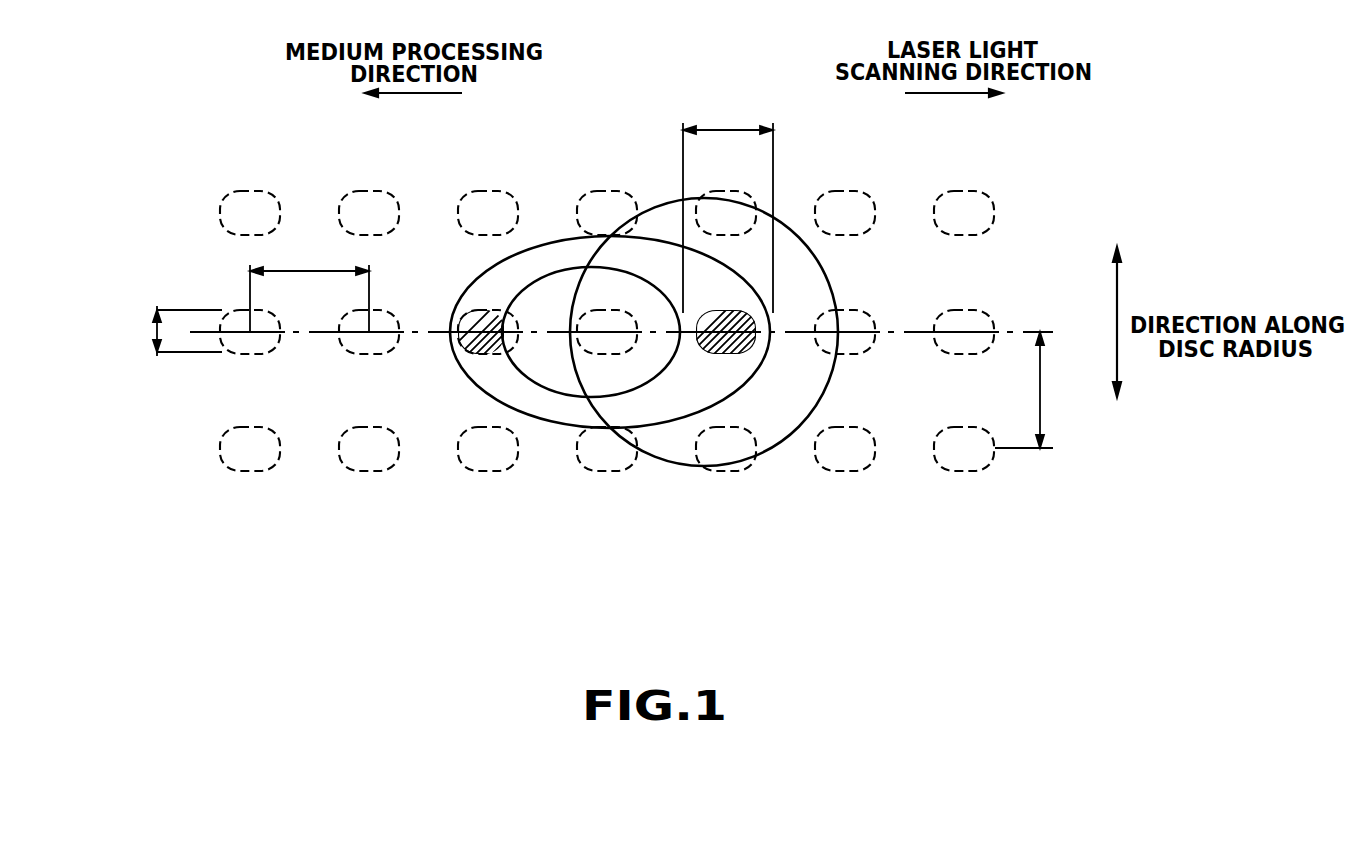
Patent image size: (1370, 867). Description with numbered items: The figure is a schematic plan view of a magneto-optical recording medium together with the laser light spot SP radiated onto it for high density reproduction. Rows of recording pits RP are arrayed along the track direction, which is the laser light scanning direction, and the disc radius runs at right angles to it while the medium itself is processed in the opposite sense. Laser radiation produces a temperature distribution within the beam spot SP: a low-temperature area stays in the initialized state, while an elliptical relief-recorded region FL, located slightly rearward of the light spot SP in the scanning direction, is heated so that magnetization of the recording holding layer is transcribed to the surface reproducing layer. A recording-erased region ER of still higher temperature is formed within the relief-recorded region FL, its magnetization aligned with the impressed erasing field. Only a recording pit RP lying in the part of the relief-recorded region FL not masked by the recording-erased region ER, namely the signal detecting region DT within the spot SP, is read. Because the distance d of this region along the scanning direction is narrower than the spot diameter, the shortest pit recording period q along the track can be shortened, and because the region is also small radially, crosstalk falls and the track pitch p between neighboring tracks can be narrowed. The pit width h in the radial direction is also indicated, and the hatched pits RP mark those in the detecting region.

The recording pit RP is at (978, 307).
The recording-erased region ER is at (554, 392).
The relief-recorded region FL is at (568, 429).
The signal detecting region DT is at (675, 397).
The laser light spot SP is at (790, 218).
The pit width h is at (175, 331).
The shortest pit recording period q is at (309, 284).
The distance along the laser light scanning direction d is at (728, 205).
The track pitch p is at (1029, 390).